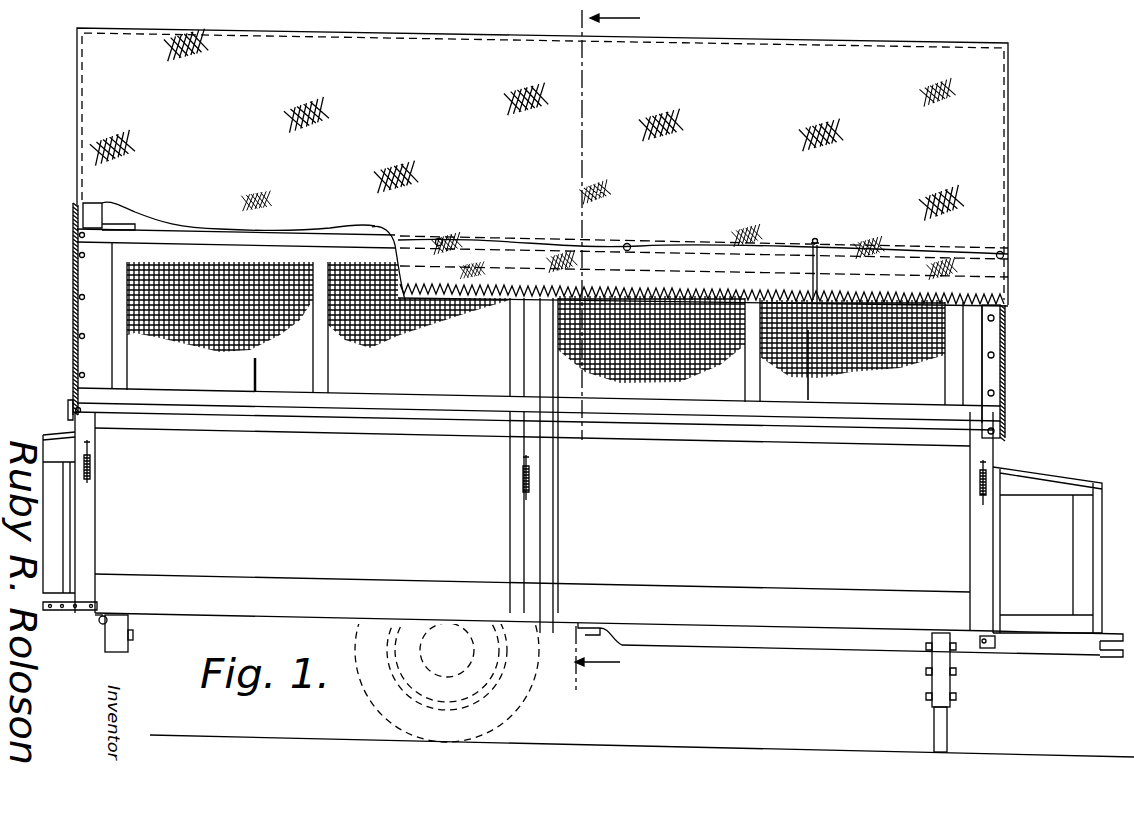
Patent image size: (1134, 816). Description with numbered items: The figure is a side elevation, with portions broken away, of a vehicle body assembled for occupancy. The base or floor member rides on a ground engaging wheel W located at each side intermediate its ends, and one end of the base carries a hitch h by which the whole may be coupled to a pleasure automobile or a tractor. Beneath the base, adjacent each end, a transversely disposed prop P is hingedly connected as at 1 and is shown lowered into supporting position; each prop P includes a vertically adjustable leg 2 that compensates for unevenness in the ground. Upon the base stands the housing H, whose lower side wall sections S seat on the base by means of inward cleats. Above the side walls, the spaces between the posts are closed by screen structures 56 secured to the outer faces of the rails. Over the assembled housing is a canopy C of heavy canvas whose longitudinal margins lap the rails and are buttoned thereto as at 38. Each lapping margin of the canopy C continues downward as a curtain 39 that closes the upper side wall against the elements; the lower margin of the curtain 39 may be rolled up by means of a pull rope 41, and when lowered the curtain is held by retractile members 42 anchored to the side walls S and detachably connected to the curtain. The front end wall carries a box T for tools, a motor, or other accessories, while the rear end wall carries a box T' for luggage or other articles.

The canopy C is at (72, 266).
The lower side wall section S is at (110, 308).
The box T is at (1047, 529).
The box T' is at (63, 496).
The housing H is at (975, 341).
The button 38 is at (441, 236).
The curtain 39 is at (762, 258).
The pull rope 41 is at (258, 380).
The retractile member 42 is at (92, 470).
The screen structure 56 is at (536, 330).
The prop P is at (130, 650).
The hinge connection 1 is at (92, 626).
The vertically adjustable leg 2 is at (936, 726).
The hitch h is at (1108, 660).
The ground engaging wheel W is at (502, 716).